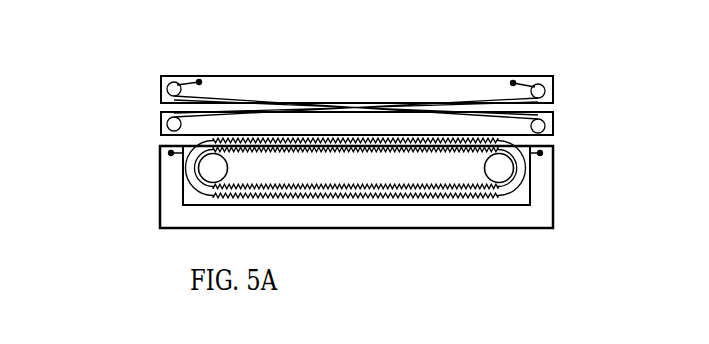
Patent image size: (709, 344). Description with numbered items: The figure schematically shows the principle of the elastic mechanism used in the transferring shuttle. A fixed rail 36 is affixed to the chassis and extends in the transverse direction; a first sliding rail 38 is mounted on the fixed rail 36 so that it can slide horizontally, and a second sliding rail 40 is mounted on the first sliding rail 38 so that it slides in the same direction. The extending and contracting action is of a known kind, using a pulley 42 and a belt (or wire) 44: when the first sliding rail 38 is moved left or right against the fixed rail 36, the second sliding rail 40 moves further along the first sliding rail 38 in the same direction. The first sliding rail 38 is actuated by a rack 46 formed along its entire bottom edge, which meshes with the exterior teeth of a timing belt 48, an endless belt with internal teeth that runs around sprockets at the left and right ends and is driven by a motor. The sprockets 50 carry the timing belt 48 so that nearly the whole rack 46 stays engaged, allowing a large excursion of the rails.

The fixed rail 36 is at (548, 192).
The first sliding rail 38 is at (551, 114).
The second sliding rail 40 is at (468, 76).
The pulley 42 is at (175, 86).
The belt (or wire) 44 is at (246, 101).
The rack 46 is at (443, 143).
The timing belt 48 is at (502, 197).
The pulleys 50 is at (208, 172).